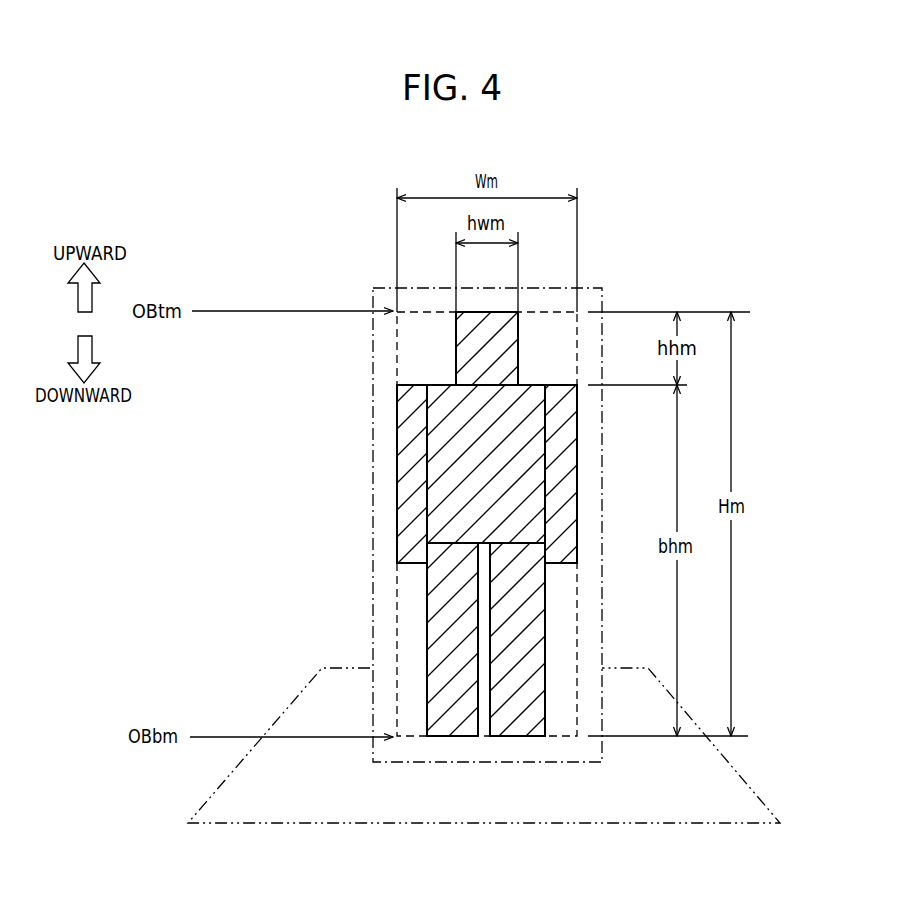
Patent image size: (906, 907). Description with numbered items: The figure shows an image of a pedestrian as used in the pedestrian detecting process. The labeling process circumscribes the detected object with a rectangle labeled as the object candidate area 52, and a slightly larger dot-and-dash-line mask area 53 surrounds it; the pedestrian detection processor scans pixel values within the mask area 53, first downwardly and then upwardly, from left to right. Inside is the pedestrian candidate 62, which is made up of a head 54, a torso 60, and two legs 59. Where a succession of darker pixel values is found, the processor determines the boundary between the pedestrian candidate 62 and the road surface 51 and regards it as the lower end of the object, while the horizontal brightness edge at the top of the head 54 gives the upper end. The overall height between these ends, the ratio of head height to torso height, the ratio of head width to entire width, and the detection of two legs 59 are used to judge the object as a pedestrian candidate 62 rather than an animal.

The road surface 51 is at (694, 800).
The object candidate area 52 is at (578, 600).
The mask area 53 is at (544, 287).
The head 54 is at (483, 311).
The legs 59 is at (455, 636).
The torso 60 is at (446, 474).
The pedestrian candidate 62 is at (453, 348).